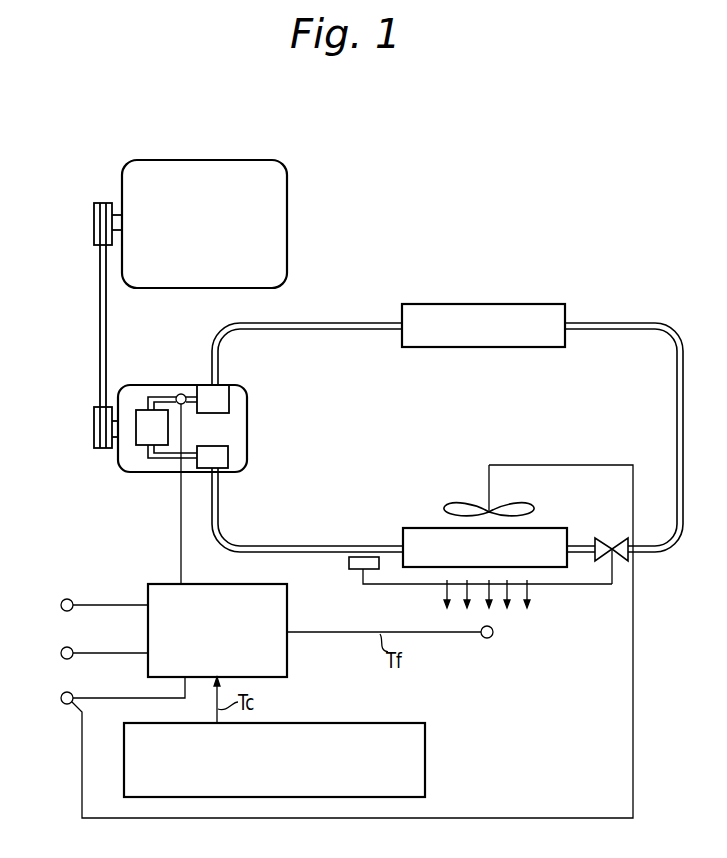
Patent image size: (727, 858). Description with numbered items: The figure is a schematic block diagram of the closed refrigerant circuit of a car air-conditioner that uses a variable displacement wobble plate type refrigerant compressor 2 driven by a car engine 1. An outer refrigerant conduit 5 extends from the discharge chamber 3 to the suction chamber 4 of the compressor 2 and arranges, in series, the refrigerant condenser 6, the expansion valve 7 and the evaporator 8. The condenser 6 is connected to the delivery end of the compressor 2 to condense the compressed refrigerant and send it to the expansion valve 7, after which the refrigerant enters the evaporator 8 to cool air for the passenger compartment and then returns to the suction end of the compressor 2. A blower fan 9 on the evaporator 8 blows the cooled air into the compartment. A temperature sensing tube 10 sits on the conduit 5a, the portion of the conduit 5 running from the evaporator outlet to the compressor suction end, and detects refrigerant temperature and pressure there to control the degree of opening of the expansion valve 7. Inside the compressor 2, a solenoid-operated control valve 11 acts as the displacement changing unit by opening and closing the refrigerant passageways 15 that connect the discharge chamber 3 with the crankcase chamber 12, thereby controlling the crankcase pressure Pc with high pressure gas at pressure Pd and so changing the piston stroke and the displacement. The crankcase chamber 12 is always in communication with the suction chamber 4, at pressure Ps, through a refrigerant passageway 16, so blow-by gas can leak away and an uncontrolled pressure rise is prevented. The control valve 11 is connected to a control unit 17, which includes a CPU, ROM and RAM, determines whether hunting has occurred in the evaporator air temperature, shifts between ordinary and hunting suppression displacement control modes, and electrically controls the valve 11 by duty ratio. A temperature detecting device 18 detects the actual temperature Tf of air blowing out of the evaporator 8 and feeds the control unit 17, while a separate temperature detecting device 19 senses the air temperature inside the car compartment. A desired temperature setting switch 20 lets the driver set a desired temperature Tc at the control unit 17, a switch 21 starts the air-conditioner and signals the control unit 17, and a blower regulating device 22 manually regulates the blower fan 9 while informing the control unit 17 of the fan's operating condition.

The car engine 1 is at (289, 228).
The variable displacement wobble plate type refrigerant compressor 2 is at (131, 386).
The discharge chamber 3 is at (202, 386).
The suction chamber 4 is at (247, 457).
The outer refrigerant conduit 5 is at (356, 322).
The conduit 5a is at (361, 545).
The refrigerant condenser 6 is at (487, 303).
The expansion valve 7 is at (612, 537).
The evaporator 8 is at (556, 529).
The blower fan 9 is at (510, 506).
The temperature sensing tube 10 is at (350, 568).
The solenoid-operated control valve 11 is at (180, 393).
The crankcase chamber 12 is at (138, 446).
The refrigerant passageways 15 is at (157, 398).
The refrigerant passageway 16 is at (165, 460).
The control unit 17 is at (288, 661).
The temperature detecting device 18 is at (492, 637).
The temperature detecting device 19 is at (62, 610).
The desired temperature setting switch 20 is at (427, 768).
The switch 21 is at (62, 658).
The blower regulating device 22 is at (62, 703).